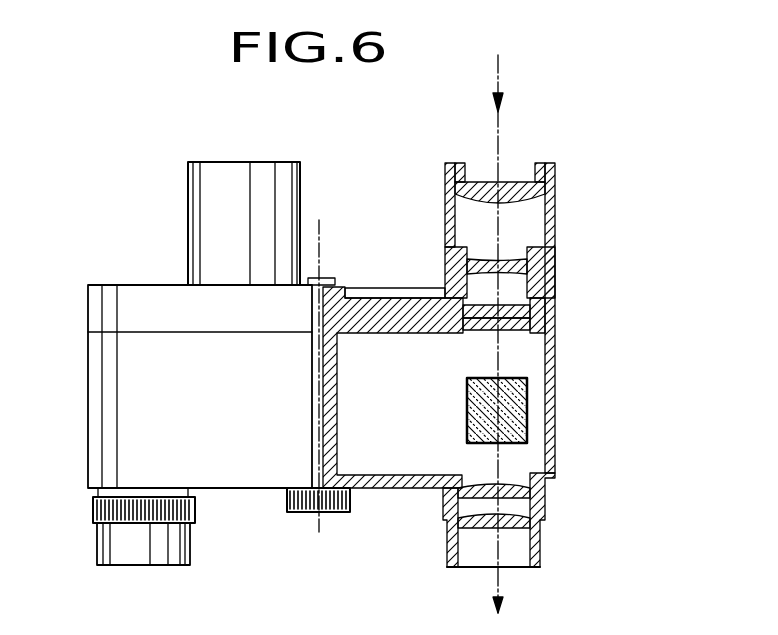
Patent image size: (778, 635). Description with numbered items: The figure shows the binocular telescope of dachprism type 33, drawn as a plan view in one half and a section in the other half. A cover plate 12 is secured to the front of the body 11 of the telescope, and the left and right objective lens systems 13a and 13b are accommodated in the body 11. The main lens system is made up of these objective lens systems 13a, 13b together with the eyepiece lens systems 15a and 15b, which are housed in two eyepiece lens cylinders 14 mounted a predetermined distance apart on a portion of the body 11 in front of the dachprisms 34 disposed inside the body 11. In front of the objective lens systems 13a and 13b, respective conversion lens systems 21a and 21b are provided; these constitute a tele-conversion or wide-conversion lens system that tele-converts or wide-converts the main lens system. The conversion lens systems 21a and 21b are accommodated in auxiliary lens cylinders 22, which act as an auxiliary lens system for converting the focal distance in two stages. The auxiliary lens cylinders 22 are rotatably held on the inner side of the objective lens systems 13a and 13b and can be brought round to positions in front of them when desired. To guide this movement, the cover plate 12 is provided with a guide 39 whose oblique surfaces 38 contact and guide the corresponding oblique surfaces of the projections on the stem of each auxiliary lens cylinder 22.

The body 11 is at (108, 402).
The cover plate 12 is at (362, 310).
The objective lens system 13a is at (523, 293).
The objective lens system 13b is at (513, 330).
The eyepiece lens cylinder 14 is at (133, 550).
The eyepiece lens system 15a is at (510, 490).
The eyepiece lens system 15b is at (507, 527).
The conversion lens system 21a is at (522, 185).
The conversion lens system 21b is at (545, 243).
The auxiliary lens cylinder 22 is at (236, 182).
The dachprism type binocular telescope 33 is at (592, 157).
The dachprism 34 is at (527, 407).
The oblique surface 38 is at (400, 292).
The guide 39 is at (548, 287).